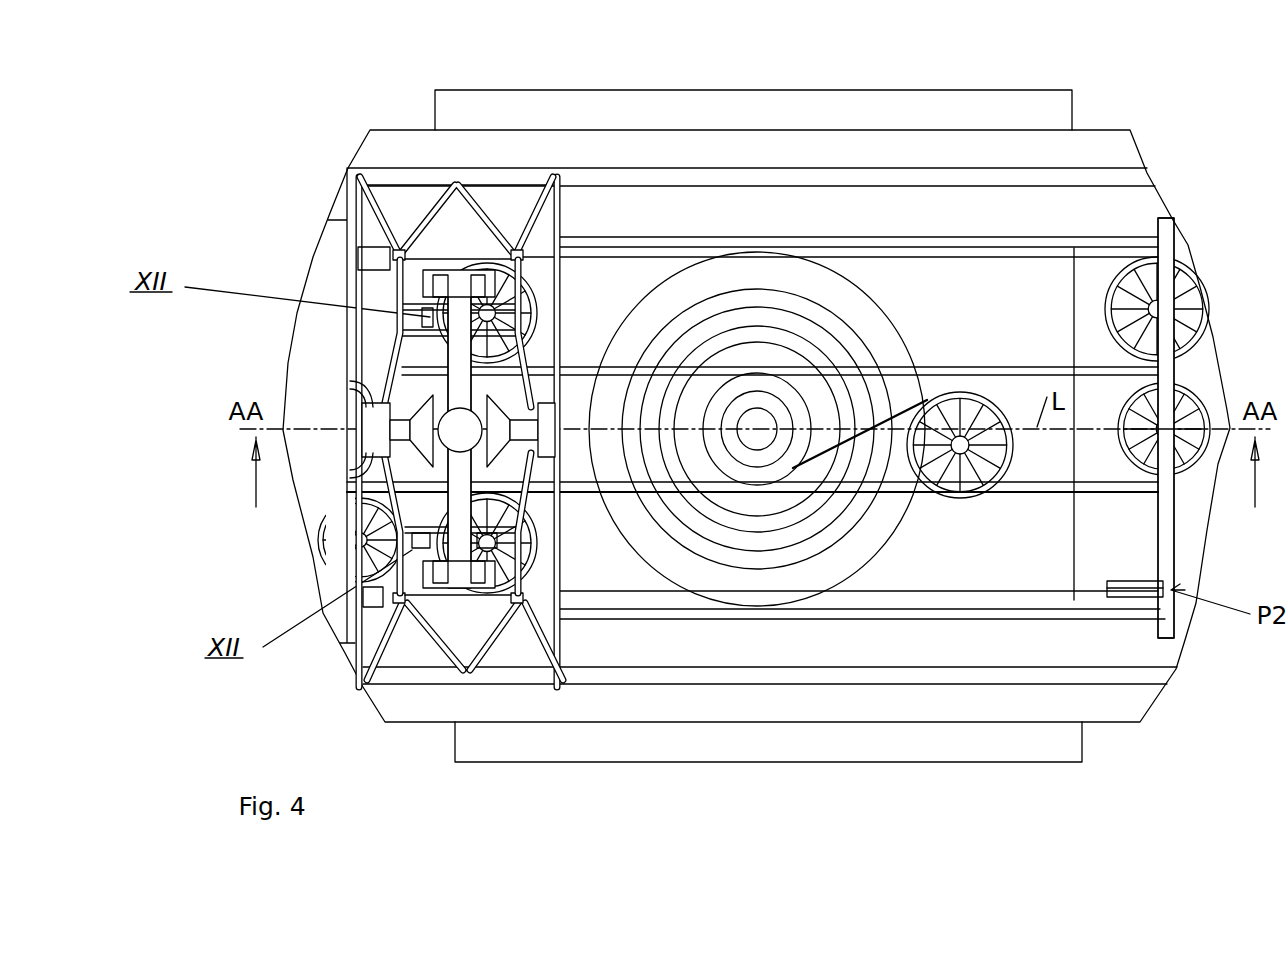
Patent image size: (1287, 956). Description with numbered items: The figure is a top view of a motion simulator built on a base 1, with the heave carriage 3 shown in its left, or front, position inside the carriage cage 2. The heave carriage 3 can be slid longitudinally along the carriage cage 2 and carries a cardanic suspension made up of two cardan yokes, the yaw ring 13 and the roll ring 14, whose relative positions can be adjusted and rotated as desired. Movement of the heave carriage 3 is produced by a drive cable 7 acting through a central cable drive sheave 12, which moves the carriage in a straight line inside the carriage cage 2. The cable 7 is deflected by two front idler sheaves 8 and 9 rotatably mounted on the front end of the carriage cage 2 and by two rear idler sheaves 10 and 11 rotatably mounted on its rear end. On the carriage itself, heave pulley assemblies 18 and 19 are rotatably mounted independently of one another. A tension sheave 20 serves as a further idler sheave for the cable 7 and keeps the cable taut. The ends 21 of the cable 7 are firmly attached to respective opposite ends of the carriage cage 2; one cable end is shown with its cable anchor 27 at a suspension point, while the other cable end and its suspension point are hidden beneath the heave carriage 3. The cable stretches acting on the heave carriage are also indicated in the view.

The base 1 is at (1012, 128).
The carriage cage 2 is at (1097, 212).
The heave carriage 3 is at (397, 287).
The drive cable 7 is at (1097, 485).
The front idler sheave 8 is at (370, 392).
The front idler sheave 9 is at (348, 517).
The rear idler sheave 10 is at (1118, 298).
The rear idler sheave 11 is at (1158, 387).
The central cable drive sheave 12 is at (797, 405).
The yaw ring 13 is at (348, 468).
The roll ring 14 is at (460, 300).
The heave pulley assembly 18 is at (437, 336).
The heave pulley assembly 19 is at (493, 493).
The tension sheave 20 is at (977, 497).
The cable ends 21 is at (1090, 590).
The cable anchor 27 is at (1137, 597).